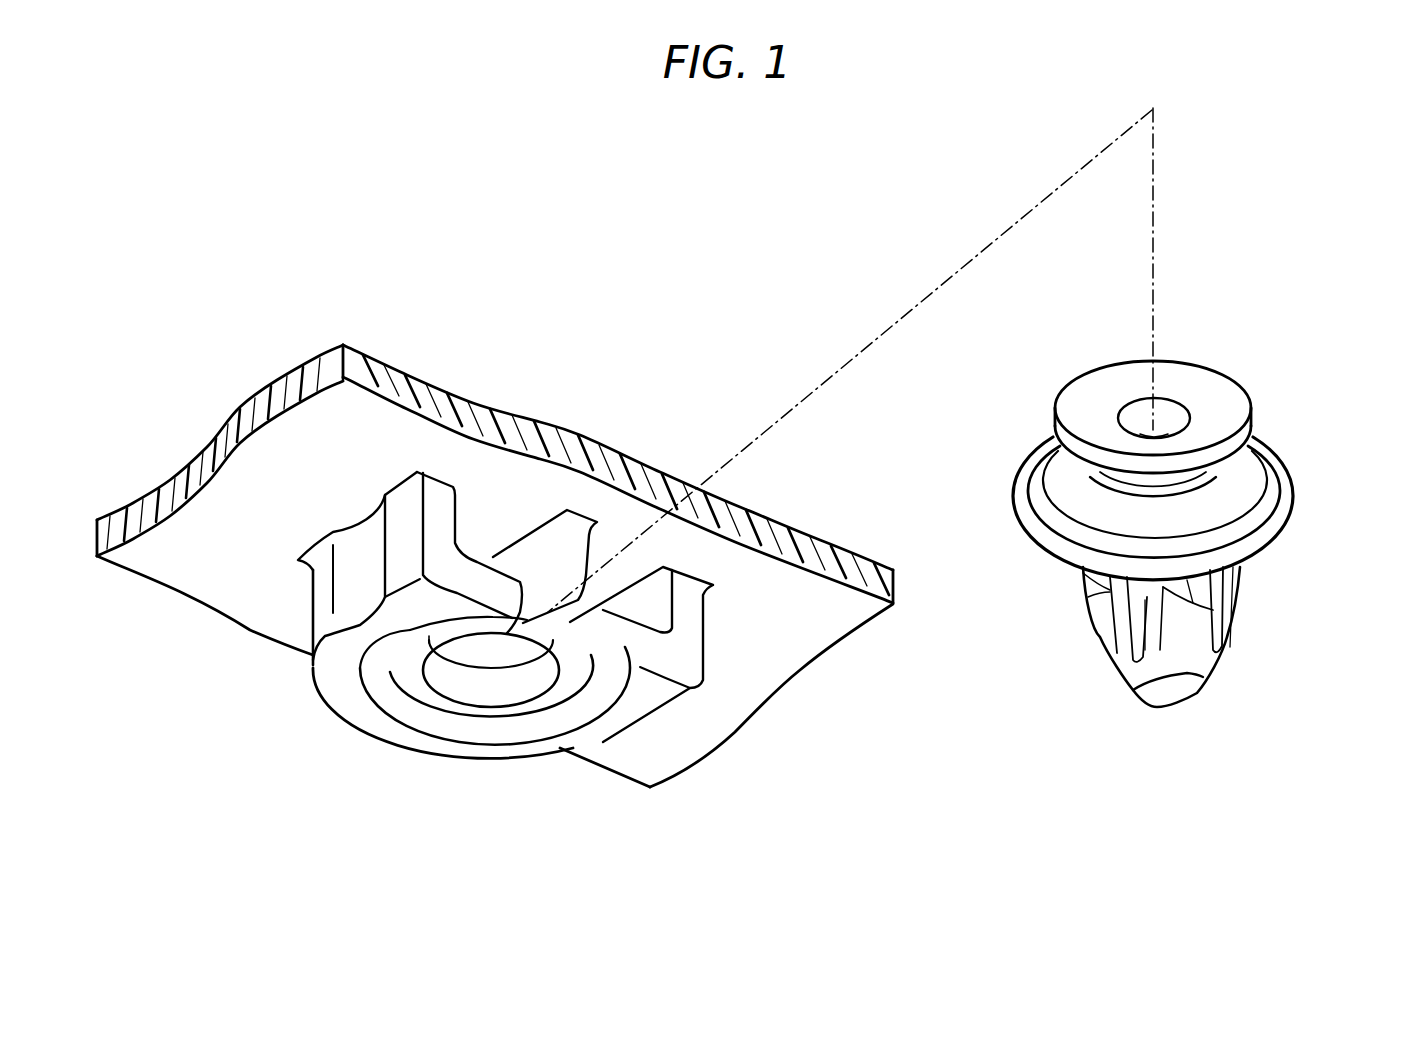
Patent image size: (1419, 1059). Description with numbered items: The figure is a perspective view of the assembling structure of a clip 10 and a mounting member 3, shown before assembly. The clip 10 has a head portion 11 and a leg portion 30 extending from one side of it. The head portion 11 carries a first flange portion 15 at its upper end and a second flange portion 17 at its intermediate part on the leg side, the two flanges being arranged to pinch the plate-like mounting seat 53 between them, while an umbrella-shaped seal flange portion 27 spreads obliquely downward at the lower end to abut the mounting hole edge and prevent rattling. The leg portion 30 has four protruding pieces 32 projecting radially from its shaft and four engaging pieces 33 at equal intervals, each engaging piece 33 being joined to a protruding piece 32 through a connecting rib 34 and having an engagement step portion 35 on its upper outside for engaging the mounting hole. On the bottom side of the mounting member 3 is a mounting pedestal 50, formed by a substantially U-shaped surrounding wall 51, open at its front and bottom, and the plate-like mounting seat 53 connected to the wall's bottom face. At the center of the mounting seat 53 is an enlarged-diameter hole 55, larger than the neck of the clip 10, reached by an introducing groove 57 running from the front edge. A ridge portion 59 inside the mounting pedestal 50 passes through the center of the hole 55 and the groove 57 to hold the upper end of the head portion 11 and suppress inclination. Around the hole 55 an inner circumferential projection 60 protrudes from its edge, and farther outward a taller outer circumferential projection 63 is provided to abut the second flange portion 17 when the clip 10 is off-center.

The mounting member 3 is at (617, 463).
The clip 10 is at (1204, 512).
The head portion 11 is at (1204, 458).
The first flange portion 15 is at (1207, 387).
The second flange portion 17 is at (1260, 485).
The seal flange portion 27 is at (1277, 523).
The leg portion 30 is at (1200, 671).
The protruding piece 32 is at (1123, 640).
The engaging piece 33 is at (1110, 643).
The connecting rib 34 is at (1137, 687).
The engagement step portion 35 is at (1163, 613).
The mounting pedestal 50 is at (492, 628).
The surrounding wall 51 is at (313, 600).
The plate-like mounting seat 53 is at (385, 735).
The enlarged-diameter hole 55 is at (533, 687).
The introducing groove 57 is at (627, 563).
The ridge portion 59 is at (538, 547).
The inner circumferential projection 60 is at (440, 707).
The outer circumferential projection 63 is at (643, 697).